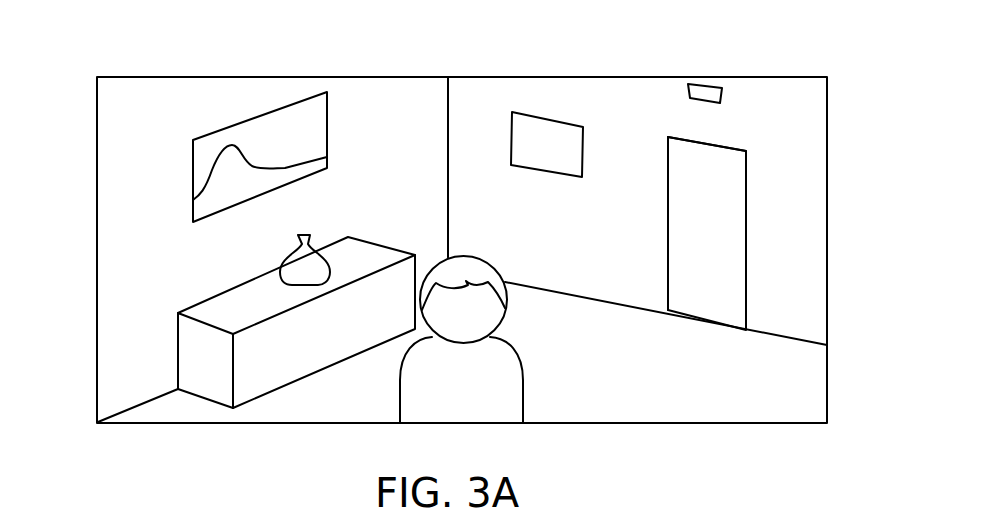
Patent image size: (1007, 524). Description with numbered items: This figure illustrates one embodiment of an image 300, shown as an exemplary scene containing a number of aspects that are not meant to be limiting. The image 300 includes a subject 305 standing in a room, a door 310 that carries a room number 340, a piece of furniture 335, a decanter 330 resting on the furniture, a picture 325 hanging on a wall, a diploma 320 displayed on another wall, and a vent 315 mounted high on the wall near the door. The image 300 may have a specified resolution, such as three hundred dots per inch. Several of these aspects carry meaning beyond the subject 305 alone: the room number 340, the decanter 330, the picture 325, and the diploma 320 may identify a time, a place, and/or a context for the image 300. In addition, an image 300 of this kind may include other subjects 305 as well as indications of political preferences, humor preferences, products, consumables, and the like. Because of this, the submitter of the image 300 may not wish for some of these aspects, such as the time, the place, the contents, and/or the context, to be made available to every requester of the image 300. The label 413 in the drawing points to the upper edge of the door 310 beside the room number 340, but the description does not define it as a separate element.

The image 300 is at (95, 60).
The subject 305 is at (520, 383).
The door 310 is at (665, 268).
The vent 315 is at (705, 103).
The diploma 320 is at (585, 178).
The picture 325 is at (191, 177).
The decanter 330 is at (295, 250).
The furniture 335 is at (177, 357).
The room number 340 is at (730, 150).
The door frame / edge 413 is at (728, 150).